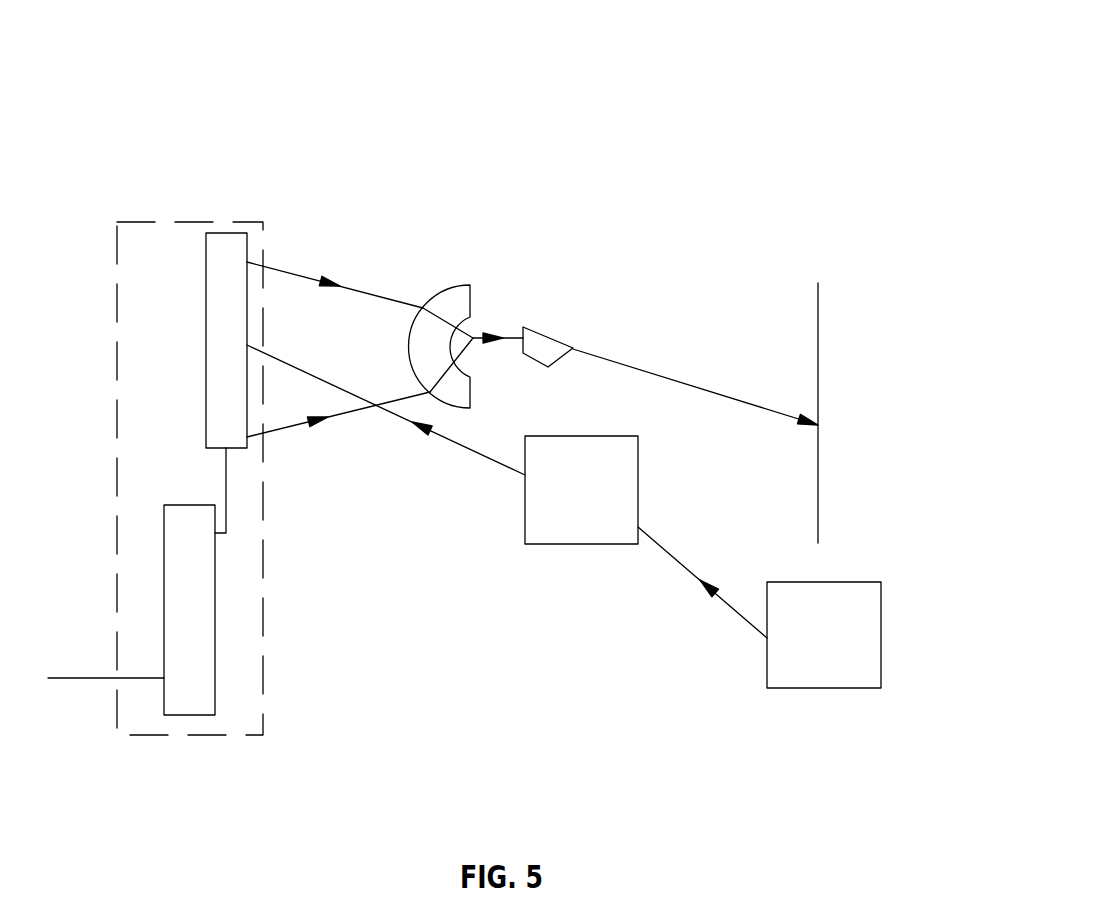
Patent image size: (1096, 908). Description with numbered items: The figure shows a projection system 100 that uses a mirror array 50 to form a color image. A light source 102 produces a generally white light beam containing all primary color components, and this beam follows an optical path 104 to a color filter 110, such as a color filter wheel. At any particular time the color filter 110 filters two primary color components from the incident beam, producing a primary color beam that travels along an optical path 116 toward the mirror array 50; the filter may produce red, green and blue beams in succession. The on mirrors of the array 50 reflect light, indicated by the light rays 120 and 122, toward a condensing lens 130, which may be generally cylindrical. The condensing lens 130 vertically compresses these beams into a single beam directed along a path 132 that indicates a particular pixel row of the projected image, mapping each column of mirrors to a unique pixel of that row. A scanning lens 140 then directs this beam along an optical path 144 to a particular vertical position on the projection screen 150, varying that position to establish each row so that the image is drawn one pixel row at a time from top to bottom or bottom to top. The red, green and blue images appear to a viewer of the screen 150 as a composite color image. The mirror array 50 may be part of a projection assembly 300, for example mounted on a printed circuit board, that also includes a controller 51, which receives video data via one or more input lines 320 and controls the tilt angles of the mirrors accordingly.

The projection system 100 is at (724, 78).
The mirror array 50 is at (248, 312).
The controller 51 is at (235, 604).
The projection assembly 300 is at (199, 516).
The input lines 320 is at (92, 644).
The light ray 120 is at (360, 283).
The light ray 122 is at (360, 406).
The condensing lens 130 is at (472, 318).
The optical path 132 is at (533, 303).
The scanning lens 140 is at (586, 324).
The optical path 144 is at (695, 367).
The projection screen 150 is at (871, 413).
The optical path 116 is at (386, 425).
The color filter 110 is at (566, 518).
The optical path 104 is at (702, 586).
The light source 102 is at (789, 646).